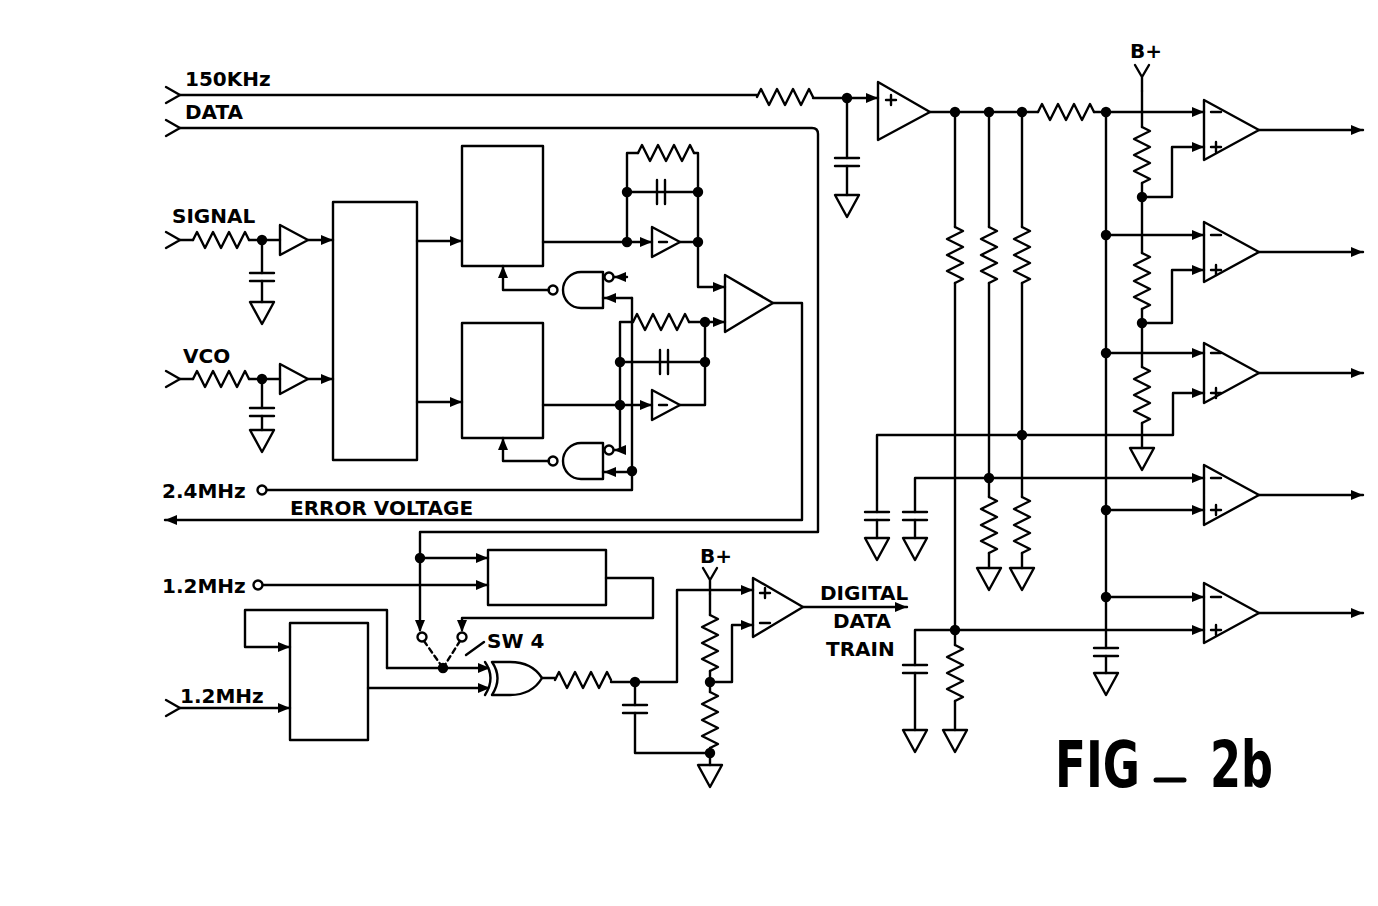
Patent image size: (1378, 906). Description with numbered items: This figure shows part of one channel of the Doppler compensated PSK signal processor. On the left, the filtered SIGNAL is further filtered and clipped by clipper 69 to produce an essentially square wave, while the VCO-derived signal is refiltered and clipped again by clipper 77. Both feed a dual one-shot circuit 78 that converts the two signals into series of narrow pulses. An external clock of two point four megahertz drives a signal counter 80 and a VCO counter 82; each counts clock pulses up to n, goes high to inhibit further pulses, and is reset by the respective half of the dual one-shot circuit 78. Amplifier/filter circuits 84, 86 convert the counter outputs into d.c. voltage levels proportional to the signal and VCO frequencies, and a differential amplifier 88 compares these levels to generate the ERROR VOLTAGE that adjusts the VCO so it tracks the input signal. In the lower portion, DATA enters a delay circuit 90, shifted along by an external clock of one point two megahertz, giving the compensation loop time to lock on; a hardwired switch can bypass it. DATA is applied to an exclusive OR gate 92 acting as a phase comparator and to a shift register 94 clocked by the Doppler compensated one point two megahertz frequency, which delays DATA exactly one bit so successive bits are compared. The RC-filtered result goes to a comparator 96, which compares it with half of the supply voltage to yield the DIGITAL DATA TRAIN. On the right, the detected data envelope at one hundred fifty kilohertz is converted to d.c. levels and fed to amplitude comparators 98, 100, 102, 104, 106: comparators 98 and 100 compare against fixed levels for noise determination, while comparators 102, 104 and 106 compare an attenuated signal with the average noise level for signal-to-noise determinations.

The clipper 69 is at (292, 224).
The clipper 77 is at (290, 365).
The dual one-shot circuit 78 is at (388, 200).
The signal counter 80 is at (543, 193).
The VCO counter 82 is at (545, 357).
The amplifier/filter circuit 84 is at (705, 175).
The amplifier/filter circuit 86 is at (715, 380).
The differential amplifier 88 is at (750, 290).
The delay circuit 90 is at (608, 557).
The exclusive OR gate 92 is at (517, 699).
The shift register 94 is at (372, 728).
The comparator 96 is at (773, 638).
The amplitude comparator 98 is at (1238, 112).
The amplitude comparator 100 is at (1236, 235).
The amplitude comparator 102 is at (1236, 355).
The amplitude comparator 104 is at (1236, 477).
The amplitude comparator 106 is at (1236, 597).